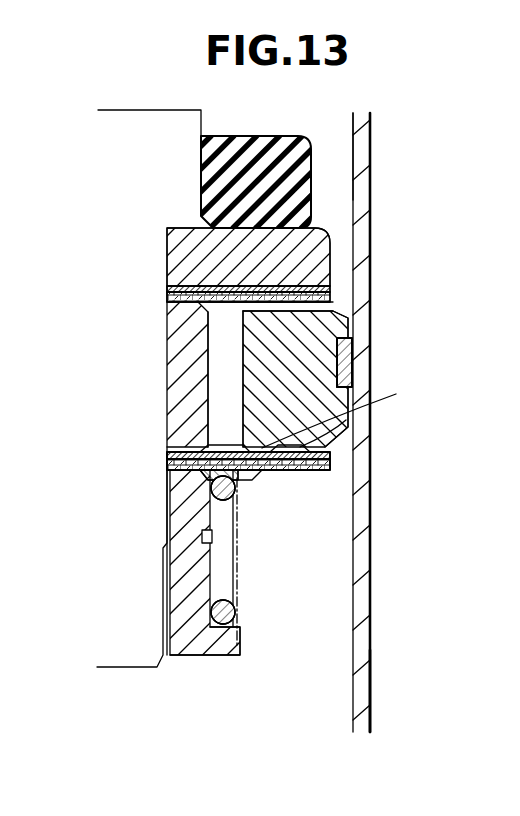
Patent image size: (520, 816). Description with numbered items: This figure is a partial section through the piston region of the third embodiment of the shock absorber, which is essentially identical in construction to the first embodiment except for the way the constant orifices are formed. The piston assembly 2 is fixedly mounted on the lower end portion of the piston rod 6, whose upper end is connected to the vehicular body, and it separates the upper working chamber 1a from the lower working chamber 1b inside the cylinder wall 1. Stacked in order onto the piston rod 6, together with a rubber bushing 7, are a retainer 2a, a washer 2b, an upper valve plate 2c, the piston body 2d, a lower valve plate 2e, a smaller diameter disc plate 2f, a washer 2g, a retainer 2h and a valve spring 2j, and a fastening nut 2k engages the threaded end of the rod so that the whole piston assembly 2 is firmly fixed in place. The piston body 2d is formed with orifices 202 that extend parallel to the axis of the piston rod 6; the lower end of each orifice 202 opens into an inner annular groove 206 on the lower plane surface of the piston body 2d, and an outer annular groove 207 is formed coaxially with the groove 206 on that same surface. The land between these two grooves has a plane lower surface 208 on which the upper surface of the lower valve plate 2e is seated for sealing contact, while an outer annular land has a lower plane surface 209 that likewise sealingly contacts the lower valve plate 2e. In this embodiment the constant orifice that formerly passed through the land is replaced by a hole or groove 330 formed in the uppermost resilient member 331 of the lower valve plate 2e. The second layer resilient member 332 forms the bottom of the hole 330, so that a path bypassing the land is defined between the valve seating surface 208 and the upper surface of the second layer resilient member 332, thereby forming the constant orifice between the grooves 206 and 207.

The wall 1 is at (371, 197).
The upper working chamber 1a is at (343, 167).
The lower working chamber 1b is at (261, 716).
The piston assembly 2 is at (337, 299).
The retainer 2a is at (180, 257).
The washer 2b is at (167, 288).
The upper valve plate 2c is at (343, 287).
The piston body 2d is at (335, 328).
The lower valve plate 2e is at (167, 460).
The smaller diameter disc plate 2f is at (262, 488).
The washer 2g is at (171, 484).
The retainer 2h is at (292, 484).
The valve spring 2j is at (236, 612).
The fastening nut 2k is at (232, 668).
The piston rod 6 is at (198, 110).
The rubber bushing 7 is at (259, 140).
The orifices 202 is at (215, 345).
The inner annular groove 206 is at (354, 396).
The outer annular groove 207 is at (335, 461).
The plane lower surface 208 is at (305, 447).
The lower plane surface 209 is at (262, 480).
The hole or groove 330 is at (379, 412).
The uppermost resilient member 331 is at (345, 464).
The second layer resilient member 332 is at (340, 470).